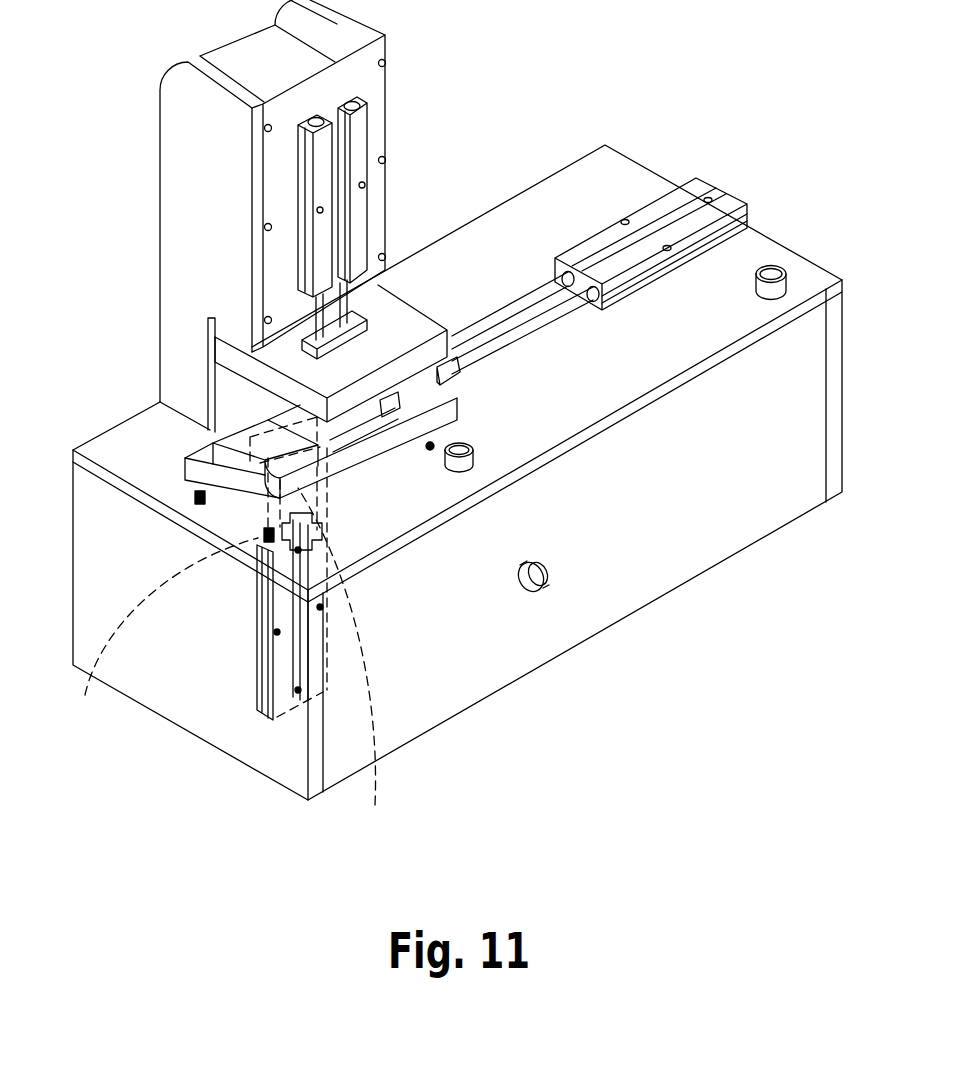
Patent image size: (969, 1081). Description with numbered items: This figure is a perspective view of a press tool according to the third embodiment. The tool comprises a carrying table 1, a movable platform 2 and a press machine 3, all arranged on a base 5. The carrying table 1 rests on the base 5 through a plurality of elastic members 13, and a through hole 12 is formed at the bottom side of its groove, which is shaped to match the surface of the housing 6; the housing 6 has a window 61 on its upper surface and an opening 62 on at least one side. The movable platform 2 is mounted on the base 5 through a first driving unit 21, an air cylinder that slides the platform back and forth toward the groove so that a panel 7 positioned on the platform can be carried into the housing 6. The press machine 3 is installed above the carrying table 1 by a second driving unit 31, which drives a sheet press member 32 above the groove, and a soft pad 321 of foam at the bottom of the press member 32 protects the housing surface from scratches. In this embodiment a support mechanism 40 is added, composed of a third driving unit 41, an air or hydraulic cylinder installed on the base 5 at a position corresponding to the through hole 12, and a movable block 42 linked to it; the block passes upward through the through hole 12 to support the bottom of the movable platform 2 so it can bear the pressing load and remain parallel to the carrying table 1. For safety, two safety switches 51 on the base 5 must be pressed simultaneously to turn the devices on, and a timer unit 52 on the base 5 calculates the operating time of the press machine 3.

The carrying table 1 is at (343, 493).
The through hole 12 is at (342, 665).
The elastic members 13 is at (430, 450).
The movable platform 2 is at (410, 388).
The first driving unit 21 is at (618, 216).
The press machine 3 is at (279, 259).
The second driving unit 31 is at (357, 160).
The press member 32 is at (397, 317).
The soft pad 321 is at (393, 412).
The support mechanism 40 is at (157, 632).
The third driving unit 41 is at (245, 632).
The movable block 42 is at (290, 436).
The base 5 is at (540, 183).
The safety switches 51 is at (769, 268).
The timer unit 52 is at (540, 588).
The housing 6 is at (247, 470).
The window 61 is at (300, 423).
The opening 62 is at (300, 445).
The panel 7 is at (240, 425).